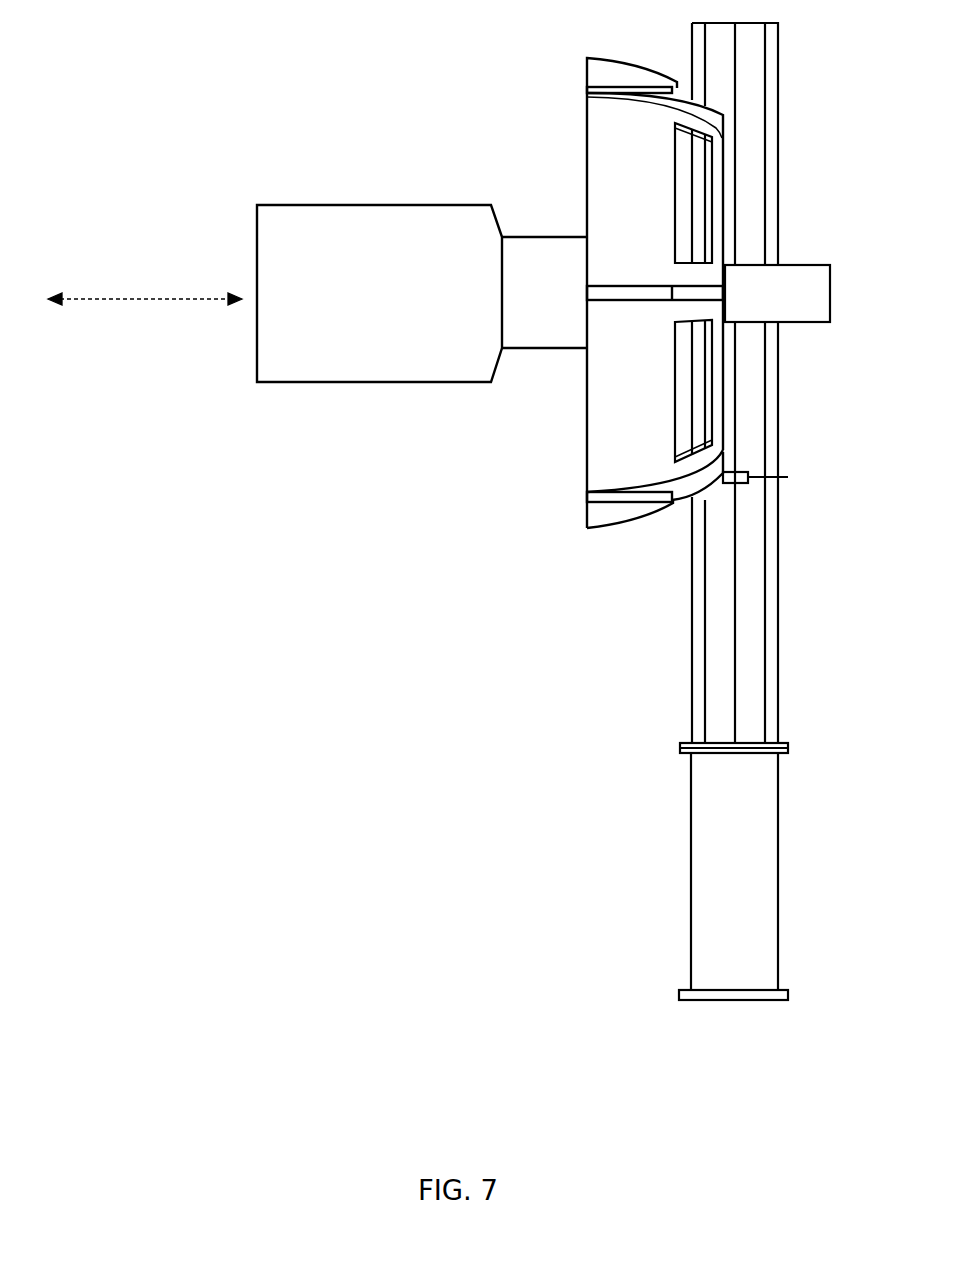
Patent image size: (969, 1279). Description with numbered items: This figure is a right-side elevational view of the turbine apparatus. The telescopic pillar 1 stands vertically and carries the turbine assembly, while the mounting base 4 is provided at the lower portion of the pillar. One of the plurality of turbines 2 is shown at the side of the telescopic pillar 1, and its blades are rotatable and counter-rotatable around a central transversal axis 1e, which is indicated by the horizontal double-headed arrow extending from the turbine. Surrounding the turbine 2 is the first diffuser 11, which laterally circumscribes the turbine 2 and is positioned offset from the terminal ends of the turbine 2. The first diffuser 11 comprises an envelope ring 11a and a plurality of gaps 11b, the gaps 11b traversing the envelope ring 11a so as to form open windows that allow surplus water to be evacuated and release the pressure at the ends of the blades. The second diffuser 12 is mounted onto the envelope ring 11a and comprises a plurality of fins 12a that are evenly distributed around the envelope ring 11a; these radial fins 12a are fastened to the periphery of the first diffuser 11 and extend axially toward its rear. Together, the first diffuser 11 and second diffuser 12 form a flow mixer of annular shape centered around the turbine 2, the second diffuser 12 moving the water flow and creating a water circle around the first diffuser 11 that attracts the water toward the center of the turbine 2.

The telescopic pillar 1 is at (760, 402).
The central transversal axis 1e is at (178, 297).
The turbine 2 is at (517, 158).
The mounting base 4 is at (762, 930).
The first diffuser 11 is at (665, 336).
The envelope ring 11a is at (599, 433).
The gap 11b is at (695, 207).
The second diffuser 12 is at (632, 558).
The fin 12a is at (693, 482).